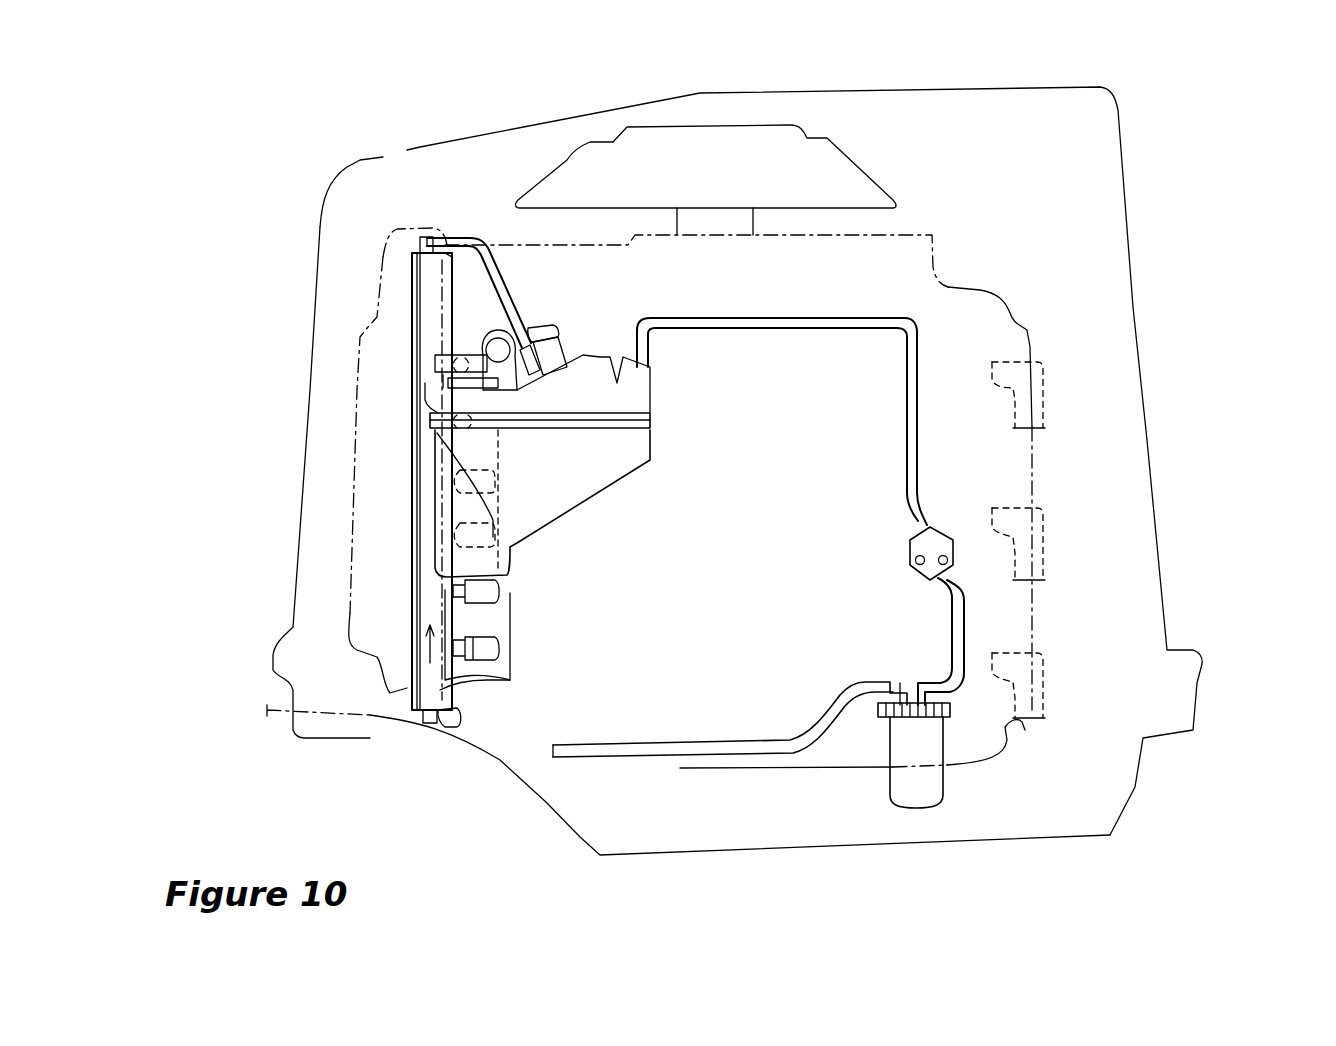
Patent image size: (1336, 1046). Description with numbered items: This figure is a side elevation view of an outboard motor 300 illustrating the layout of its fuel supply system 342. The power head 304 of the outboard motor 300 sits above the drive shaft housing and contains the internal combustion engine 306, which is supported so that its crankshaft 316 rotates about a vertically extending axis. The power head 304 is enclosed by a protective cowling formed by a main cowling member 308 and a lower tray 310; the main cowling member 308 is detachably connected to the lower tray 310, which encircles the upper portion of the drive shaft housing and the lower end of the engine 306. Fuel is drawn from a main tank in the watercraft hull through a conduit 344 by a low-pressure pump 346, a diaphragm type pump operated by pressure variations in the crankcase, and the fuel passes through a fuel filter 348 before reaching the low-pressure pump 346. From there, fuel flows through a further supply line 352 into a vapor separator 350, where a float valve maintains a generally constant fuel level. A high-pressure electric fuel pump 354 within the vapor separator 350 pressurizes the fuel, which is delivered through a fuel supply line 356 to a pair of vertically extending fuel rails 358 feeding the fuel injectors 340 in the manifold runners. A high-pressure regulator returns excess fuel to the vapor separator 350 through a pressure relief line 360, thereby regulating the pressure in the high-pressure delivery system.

The outboard motor 300 is at (1218, 140).
The power head 304 is at (1133, 278).
The internal combustion engine 306 is at (1013, 325).
The main cowling member 308 is at (1150, 480).
The lower tray 310 is at (1137, 787).
The crankshaft 316 is at (753, 217).
The fuel injector 340 is at (407, 712).
The fuel supply system 342 is at (995, 618).
The conduit 344 is at (727, 748).
The low-pressure pump 346 is at (943, 530).
The fuel filter 348 is at (943, 783).
The vapor separator 350 is at (627, 463).
The supply line 352 is at (833, 333).
The high-pressure electric fuel pump 354 is at (467, 435).
The fuel supply line 356 is at (450, 730).
The fuel rails 358 is at (407, 593).
The pressure relief line 360 is at (500, 282).